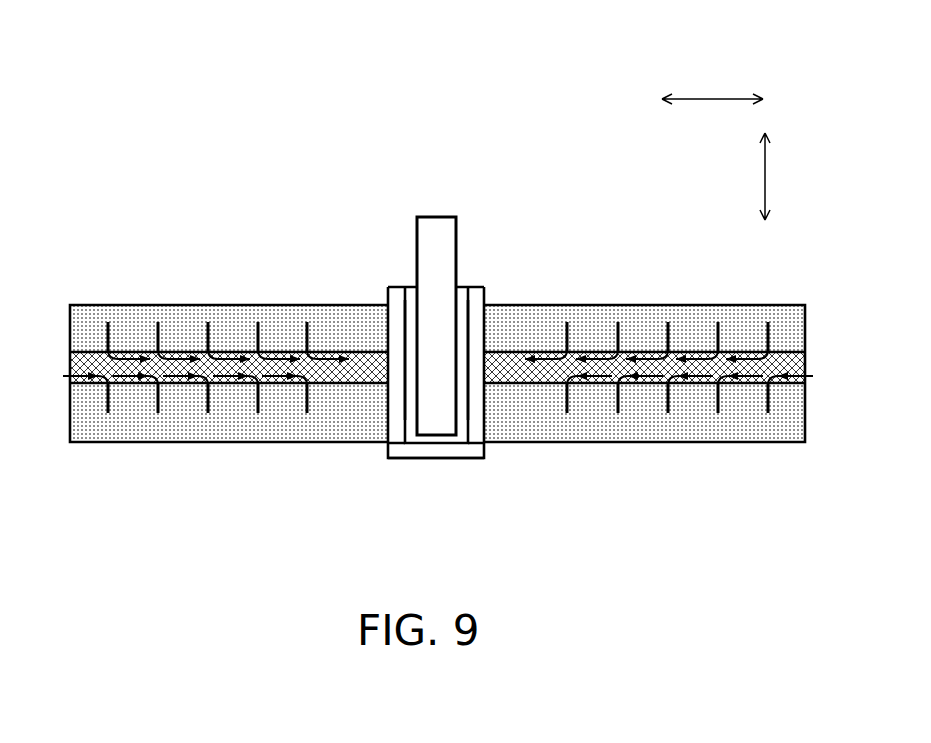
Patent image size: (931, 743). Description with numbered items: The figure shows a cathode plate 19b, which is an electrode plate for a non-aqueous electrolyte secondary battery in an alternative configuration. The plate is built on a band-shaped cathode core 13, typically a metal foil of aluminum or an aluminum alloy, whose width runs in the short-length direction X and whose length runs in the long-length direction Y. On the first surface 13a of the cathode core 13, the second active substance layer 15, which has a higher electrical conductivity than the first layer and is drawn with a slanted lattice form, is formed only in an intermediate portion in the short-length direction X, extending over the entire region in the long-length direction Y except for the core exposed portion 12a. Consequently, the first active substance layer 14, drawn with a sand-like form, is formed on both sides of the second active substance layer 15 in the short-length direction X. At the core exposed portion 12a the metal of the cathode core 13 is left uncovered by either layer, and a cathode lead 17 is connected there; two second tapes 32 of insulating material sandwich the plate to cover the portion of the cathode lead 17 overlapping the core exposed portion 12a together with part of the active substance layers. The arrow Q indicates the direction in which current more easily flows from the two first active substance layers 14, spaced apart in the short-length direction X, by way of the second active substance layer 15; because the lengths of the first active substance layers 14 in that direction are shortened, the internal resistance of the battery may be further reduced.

The first active substance layer 14 is at (285, 320).
The second active substance layer 15 is at (365, 390).
The arrow Q is at (110, 323).
The cathode core 13 is at (466, 444).
The second tape 32 is at (406, 460).
The first surface 13a is at (400, 308).
The core exposed portion 12a is at (474, 308).
The cathode lead 17 is at (436, 226).
The cathode plate 19b is at (553, 240).
The short-length direction X is at (768, 177).
The long-length direction Y is at (711, 97).